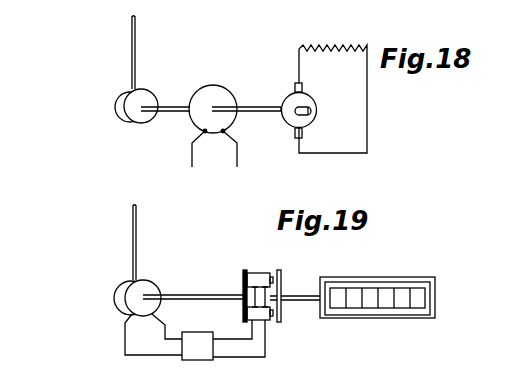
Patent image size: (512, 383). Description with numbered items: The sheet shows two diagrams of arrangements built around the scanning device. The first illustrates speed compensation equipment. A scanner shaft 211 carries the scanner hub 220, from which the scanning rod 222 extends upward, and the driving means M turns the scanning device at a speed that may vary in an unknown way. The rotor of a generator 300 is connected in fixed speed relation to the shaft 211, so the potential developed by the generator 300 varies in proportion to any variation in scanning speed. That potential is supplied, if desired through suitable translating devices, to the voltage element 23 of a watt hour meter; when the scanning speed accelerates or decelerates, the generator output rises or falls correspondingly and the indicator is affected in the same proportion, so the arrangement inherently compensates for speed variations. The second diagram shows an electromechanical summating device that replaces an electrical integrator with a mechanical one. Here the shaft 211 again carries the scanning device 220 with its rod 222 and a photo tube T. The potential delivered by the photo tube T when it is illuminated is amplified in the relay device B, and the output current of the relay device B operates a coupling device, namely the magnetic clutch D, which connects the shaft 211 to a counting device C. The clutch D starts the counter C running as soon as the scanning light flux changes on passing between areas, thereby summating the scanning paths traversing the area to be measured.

In FIG. 18, the scanning rod 222 is at (135, 38).
In FIG. 19, the scanning rod 222 is at (138, 220).
In FIG. 18, the scanner hub 220 is at (153, 98).
In FIG. 19, the scanner hub 220 is at (156, 277).
In FIG. 18, the scanner shaft 211 is at (173, 113).
In FIG. 19, the scanner shaft 211 is at (222, 294).
In FIG. 18, the driving means M is at (227, 95).
In FIG. 18, the generator 300 is at (305, 103).
In FIG. 18, the voltage element 23 is at (323, 45).
In FIG. 19, the photo tube T is at (140, 300).
In FIG. 19, the relay device B is at (223, 340).
In FIG. 19, the magnetic clutch D is at (266, 258).
In FIG. 19, the counting device C is at (400, 276).